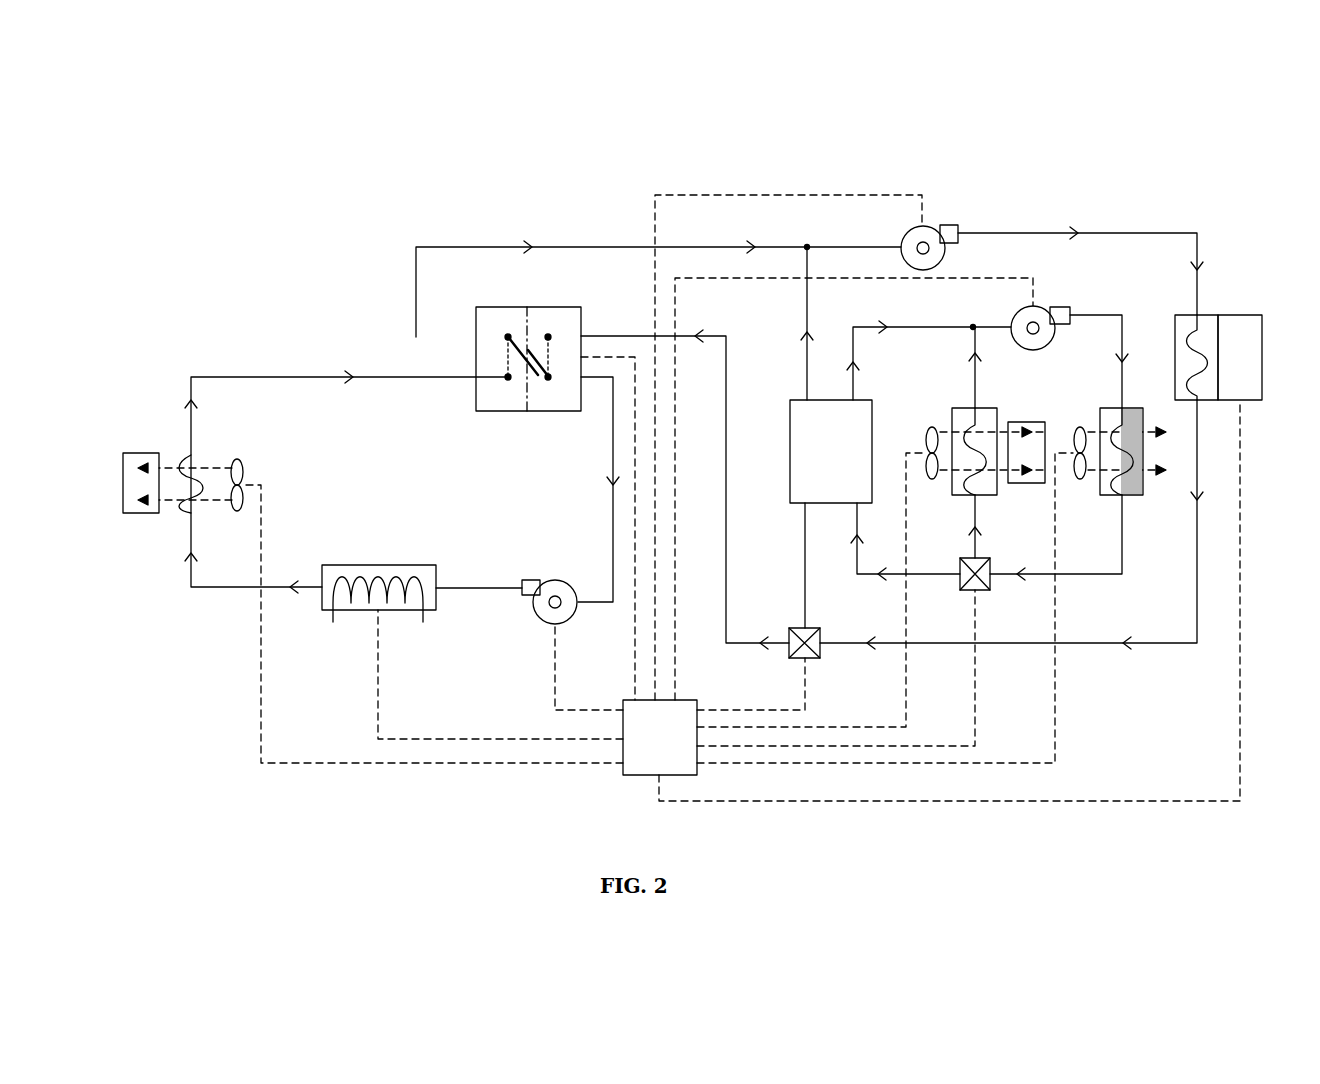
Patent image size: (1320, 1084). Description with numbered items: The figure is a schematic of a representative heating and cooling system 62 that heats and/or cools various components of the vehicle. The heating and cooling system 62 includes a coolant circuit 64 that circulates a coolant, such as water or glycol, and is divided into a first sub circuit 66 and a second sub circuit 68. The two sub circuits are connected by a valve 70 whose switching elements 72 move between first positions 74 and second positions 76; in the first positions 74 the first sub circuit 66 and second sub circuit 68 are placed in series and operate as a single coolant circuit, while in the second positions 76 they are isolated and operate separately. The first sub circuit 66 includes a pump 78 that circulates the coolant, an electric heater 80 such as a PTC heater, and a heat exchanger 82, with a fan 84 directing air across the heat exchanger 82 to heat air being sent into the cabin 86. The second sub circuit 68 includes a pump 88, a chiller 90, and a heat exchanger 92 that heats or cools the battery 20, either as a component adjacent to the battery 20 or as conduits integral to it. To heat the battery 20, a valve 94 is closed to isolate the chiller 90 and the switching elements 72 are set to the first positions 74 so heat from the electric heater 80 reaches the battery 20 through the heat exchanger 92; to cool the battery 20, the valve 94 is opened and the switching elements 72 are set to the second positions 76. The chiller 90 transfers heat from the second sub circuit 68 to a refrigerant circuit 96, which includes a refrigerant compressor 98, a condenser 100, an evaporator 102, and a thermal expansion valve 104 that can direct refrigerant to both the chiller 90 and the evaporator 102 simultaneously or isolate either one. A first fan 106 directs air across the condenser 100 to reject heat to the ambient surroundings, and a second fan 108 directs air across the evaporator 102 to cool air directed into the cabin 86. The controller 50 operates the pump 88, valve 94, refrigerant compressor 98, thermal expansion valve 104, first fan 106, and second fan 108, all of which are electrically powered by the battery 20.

The battery 20 is at (1240, 315).
The controller 50 is at (641, 775).
The heating and cooling system 62 is at (1098, 152).
The coolant circuit 64 is at (452, 212).
The first sub circuit 66 is at (285, 377).
The second sub circuit 68 is at (1120, 232).
The valve 70 is at (524, 377).
The switching elements 72 is at (540, 347).
The first positions 74 is at (500, 352).
The second positions 76 is at (527, 307).
The pump 78 is at (535, 581).
The electric heater 80 is at (400, 565).
The heat exchanger 82 is at (185, 468).
The fan 84 is at (244, 468).
The cabin 86 is at (140, 513).
The pump 88 is at (945, 222).
The chiller 90 is at (790, 443).
The heat exchanger 92 is at (1185, 315).
The valve 94 is at (795, 628).
The refrigerant circuit 96 is at (1085, 312).
The refrigerant compressor 98 is at (1045, 306).
The condenser 100 is at (1112, 408).
The evaporator 102 is at (965, 400).
The thermal expansion valve 104 is at (965, 560).
The first fan 106 is at (1078, 428).
The second fan 108 is at (930, 428).